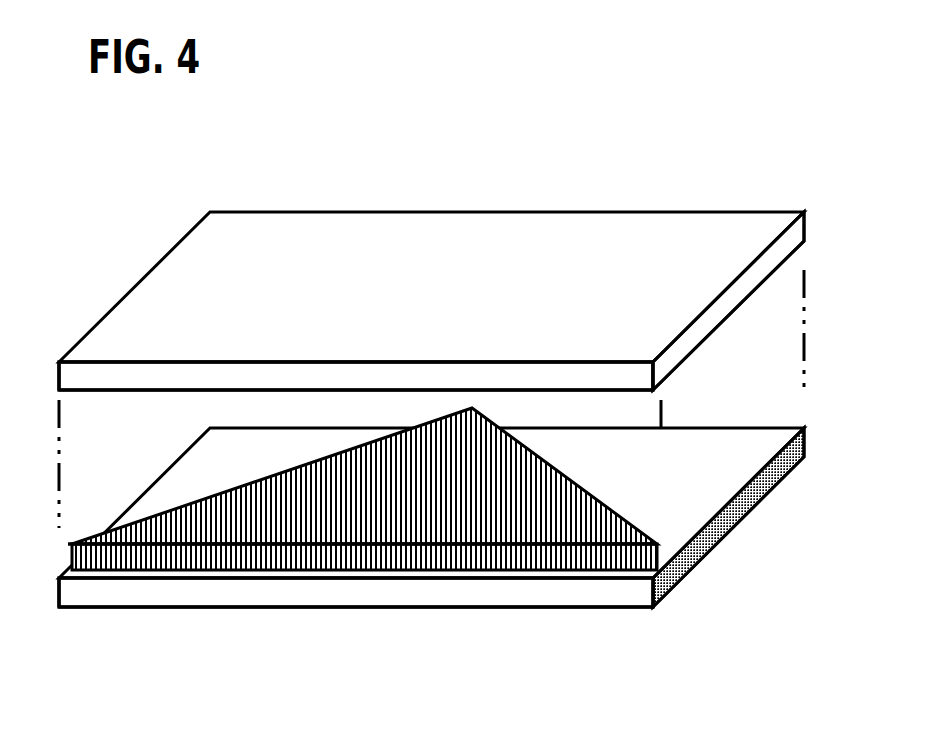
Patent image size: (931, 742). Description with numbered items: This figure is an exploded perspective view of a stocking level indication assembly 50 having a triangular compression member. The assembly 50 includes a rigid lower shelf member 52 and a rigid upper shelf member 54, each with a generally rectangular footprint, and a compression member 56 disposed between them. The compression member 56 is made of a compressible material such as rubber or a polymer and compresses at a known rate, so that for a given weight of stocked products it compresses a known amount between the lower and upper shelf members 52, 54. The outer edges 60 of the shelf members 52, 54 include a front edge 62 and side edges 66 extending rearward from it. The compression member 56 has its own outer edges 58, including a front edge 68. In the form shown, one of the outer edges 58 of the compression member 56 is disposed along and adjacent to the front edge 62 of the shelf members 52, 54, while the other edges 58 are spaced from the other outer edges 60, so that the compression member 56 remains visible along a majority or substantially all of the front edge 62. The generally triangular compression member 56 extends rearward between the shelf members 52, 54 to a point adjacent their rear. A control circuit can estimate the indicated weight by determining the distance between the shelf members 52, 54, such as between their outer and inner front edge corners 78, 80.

The stocking level indication assembly 50 is at (671, 82).
The lower shelf member 52 is at (710, 506).
The upper shelf member 54 is at (733, 237).
The compression member 56 is at (593, 555).
The outer edges of the compression member 58 is at (420, 555).
The outer edges of the shelf members 60 is at (628, 375).
The front edge 62 is at (83, 377).
The side edges 66 is at (777, 255).
The front edge of the compression member 68 is at (333, 555).
The outer front edge corners 78 is at (133, 362).
The inner front edge corners 80 is at (92, 390).